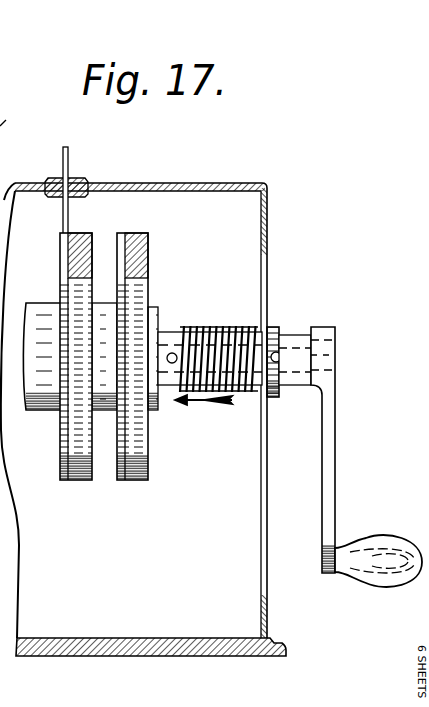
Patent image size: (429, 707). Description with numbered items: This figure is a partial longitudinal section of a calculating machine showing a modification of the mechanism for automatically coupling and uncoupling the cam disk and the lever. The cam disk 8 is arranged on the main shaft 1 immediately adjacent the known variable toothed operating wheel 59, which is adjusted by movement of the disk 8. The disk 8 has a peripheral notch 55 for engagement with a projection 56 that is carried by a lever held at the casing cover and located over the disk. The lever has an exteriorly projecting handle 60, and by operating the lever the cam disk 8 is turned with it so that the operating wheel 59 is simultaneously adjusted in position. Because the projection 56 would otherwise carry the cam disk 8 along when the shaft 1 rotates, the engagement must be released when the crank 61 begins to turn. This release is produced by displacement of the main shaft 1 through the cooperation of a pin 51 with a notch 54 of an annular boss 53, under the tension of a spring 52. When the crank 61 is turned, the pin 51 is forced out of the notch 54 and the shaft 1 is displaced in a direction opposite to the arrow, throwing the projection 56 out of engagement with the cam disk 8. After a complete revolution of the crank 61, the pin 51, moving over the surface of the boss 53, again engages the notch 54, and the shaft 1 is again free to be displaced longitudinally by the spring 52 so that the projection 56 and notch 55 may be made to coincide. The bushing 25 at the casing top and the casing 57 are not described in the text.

The main shaft 1 is at (168, 386).
The cam disk 8 is at (60, 302).
The bushing 25 is at (63, 193).
The pin 51 is at (282, 360).
The spring 52 is at (231, 386).
The annular boss 53 is at (278, 396).
The notch 54 is at (277, 352).
The peripheral notch 55 is at (134, 234).
The projection 56 is at (66, 238).
The housing 57 is at (180, 184).
The variable toothed operating wheel 59 is at (149, 262).
The handle 60 is at (68, 158).
The crank 61 is at (352, 556).